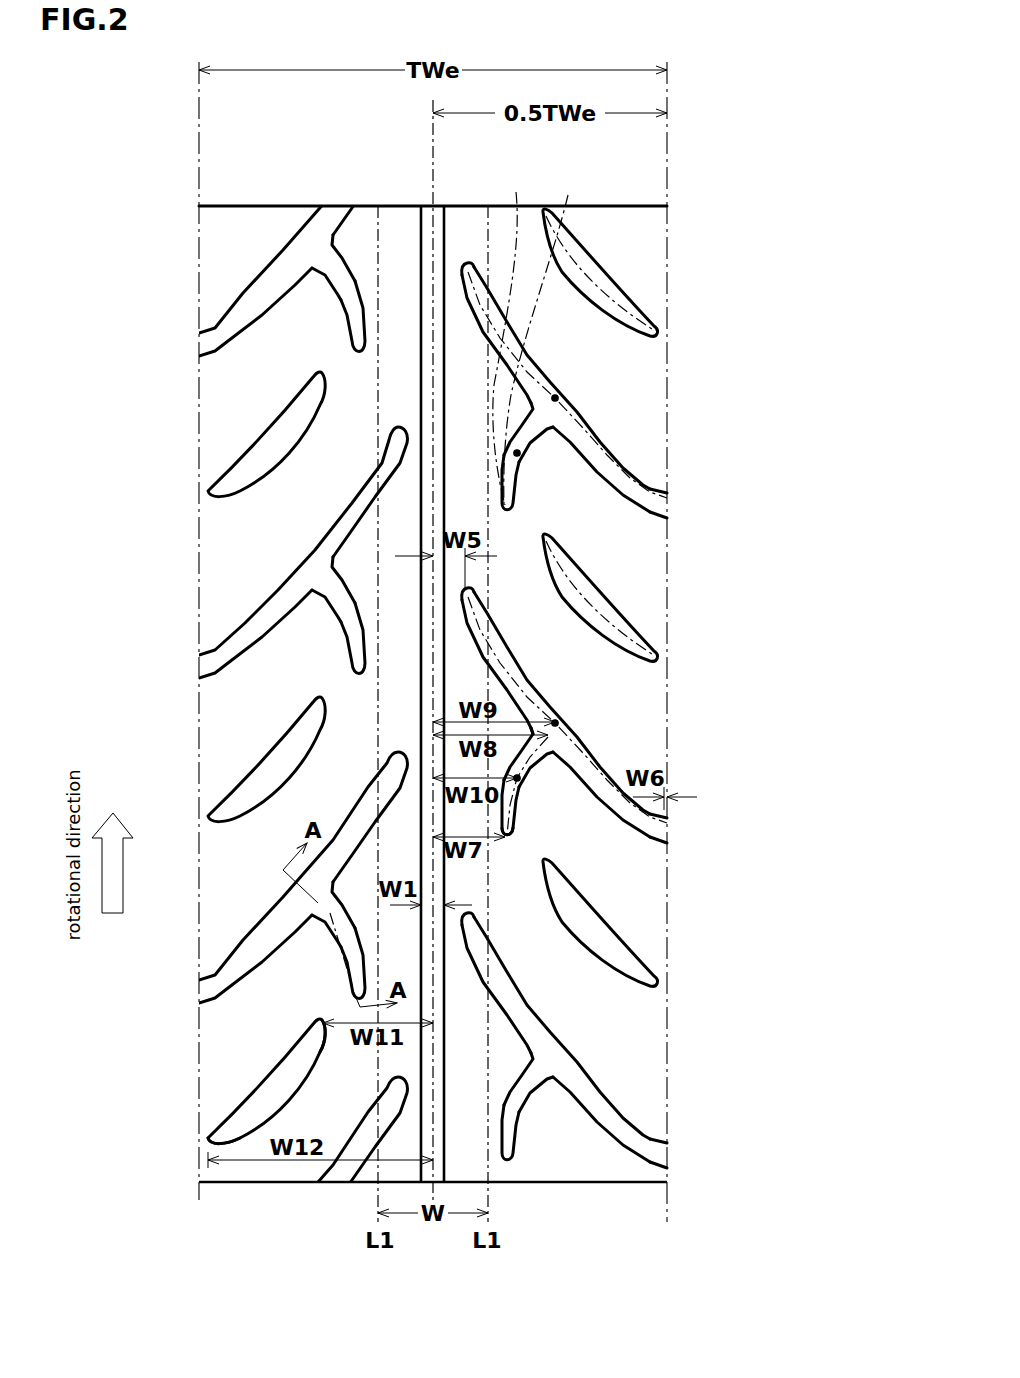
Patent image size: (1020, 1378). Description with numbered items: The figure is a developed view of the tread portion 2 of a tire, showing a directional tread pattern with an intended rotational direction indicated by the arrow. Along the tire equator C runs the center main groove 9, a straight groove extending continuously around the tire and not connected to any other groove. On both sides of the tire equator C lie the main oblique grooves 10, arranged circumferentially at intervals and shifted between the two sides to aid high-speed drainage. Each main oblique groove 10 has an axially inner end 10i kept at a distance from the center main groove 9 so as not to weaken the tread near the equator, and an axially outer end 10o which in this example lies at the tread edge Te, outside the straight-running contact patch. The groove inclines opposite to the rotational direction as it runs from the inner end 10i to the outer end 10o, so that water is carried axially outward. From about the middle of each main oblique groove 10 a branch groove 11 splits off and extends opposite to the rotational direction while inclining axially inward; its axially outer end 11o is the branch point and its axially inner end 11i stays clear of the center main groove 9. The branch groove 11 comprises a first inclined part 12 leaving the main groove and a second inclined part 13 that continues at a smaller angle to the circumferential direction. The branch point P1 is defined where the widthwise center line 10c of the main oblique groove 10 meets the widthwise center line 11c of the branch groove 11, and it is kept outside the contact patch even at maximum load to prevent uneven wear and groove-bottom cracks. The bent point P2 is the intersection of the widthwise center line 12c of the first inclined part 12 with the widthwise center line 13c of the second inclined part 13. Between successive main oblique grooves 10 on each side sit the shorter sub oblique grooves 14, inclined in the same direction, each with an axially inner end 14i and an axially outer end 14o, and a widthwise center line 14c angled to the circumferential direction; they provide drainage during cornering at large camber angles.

The tread portion 2 is at (258, 203).
The center main groove 9 is at (430, 222).
The main oblique groove 10 is at (302, 262).
The axially inner end of the main oblique groove 10i is at (466, 264).
The axially outer end of the main oblique groove 10o is at (667, 491).
The widthwise center line of the main oblique groove 10c is at (636, 487).
The branch groove 11 is at (125, 356).
The widthwise center line of the branch groove 11c is at (485, 165).
The axially inner end of the branch groove 11i is at (510, 835).
The axially outer end of the branch groove 11o is at (547, 735).
The first inclined part 12 is at (338, 275).
The widthwise center line of the first inclined part 12c is at (547, 337).
The second inclined part 13 is at (353, 334).
The widthwise center line of the second inclined part 13c is at (505, 337).
The sub oblique groove 14 is at (262, 467).
The axially inner end of the sub oblique groove 14i is at (322, 1022).
The axially outer end of the sub oblique groove 14o is at (208, 1141).
The widthwise center line of the sub oblique groove 14c is at (628, 637).
The branch point P1 is at (558, 396).
The bent point P2 is at (520, 455).
The tread edge Te is at (199, 237).
The tire equator C is at (433, 641).